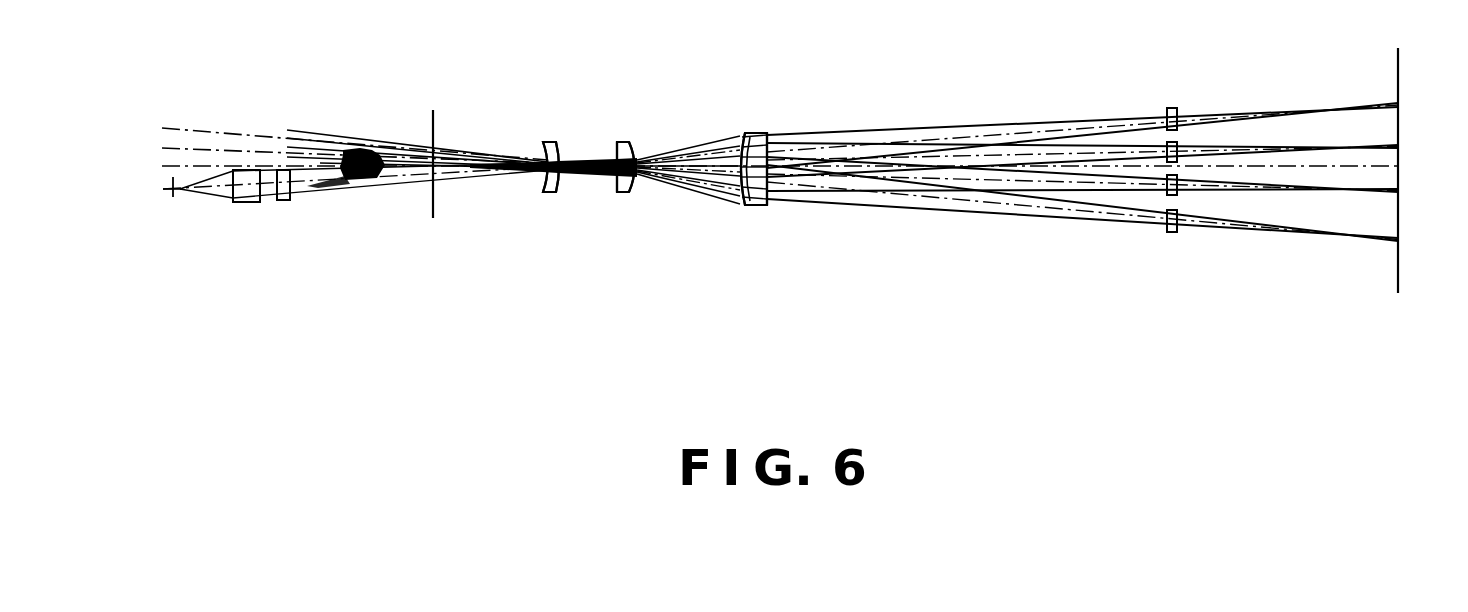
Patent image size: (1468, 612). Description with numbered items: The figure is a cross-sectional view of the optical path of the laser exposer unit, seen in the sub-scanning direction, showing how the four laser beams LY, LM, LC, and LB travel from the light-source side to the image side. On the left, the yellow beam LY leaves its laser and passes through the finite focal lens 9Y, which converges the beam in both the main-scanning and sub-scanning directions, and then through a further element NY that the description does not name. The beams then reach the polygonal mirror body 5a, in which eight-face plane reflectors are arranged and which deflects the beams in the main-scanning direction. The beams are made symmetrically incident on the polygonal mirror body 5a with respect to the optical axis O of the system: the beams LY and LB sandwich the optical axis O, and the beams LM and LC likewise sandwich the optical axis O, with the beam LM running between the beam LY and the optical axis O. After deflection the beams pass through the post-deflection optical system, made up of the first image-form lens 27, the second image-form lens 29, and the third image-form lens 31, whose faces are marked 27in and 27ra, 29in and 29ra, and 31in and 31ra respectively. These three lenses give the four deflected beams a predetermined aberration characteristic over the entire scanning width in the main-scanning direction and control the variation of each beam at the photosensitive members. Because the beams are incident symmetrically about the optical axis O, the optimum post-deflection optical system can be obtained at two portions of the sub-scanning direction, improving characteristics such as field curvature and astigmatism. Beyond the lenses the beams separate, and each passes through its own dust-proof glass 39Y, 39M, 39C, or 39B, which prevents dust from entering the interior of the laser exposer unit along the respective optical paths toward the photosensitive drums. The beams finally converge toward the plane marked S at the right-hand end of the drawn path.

The polygonal mirror body 5a is at (433, 110).
The finite focal lens 9Y is at (243, 202).
The ND filter for yellow light NY is at (283, 202).
The first image-form lens 27 is at (545, 141).
The incident surface of lens 27 27in is at (543, 187).
The exit surface of lens 27 27ra is at (559, 188).
The second image-form lens 29 is at (622, 140).
The incident surface of lens 29 29in is at (616, 152).
The exit surface of lens 29 29ra is at (638, 150).
The third image-form lens 31 is at (745, 133).
The incident surface of lens 31 31in is at (744, 205).
The exit surface of lens 31 31ra is at (768, 136).
The dust-proof glass 39Y is at (1172, 108).
The dust-proof glass 39M is at (1180, 139).
The dust-proof glass 39C is at (1178, 194).
The dust-proof glass 39B is at (1172, 233).
The laser beam LY is at (175, 198).
The laser beam LM is at (1320, 146).
The laser beam LC is at (1335, 190).
The laser beam LB is at (1326, 240).
The image plane / screen S is at (1397, 73).
The optical axis O is at (1383, 167).